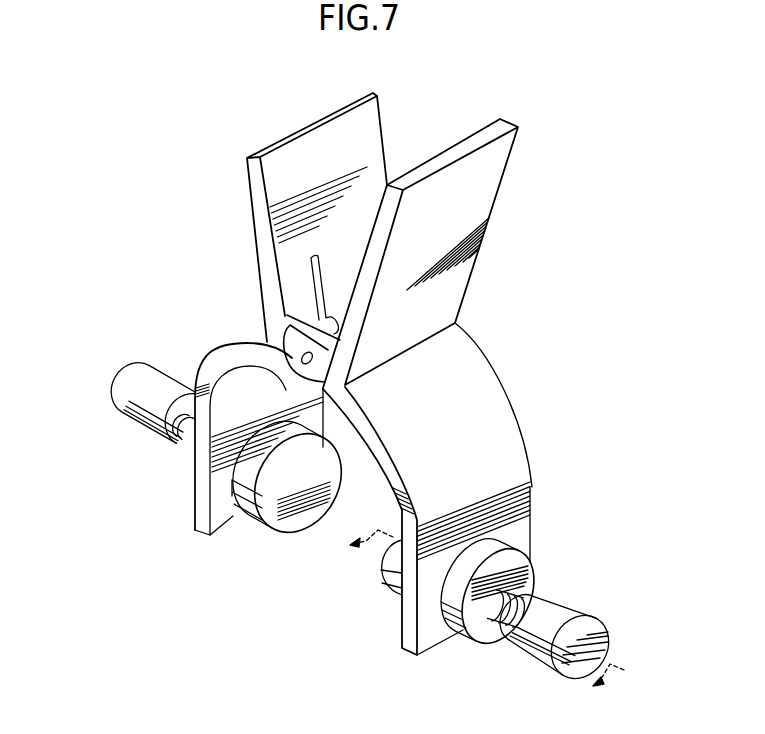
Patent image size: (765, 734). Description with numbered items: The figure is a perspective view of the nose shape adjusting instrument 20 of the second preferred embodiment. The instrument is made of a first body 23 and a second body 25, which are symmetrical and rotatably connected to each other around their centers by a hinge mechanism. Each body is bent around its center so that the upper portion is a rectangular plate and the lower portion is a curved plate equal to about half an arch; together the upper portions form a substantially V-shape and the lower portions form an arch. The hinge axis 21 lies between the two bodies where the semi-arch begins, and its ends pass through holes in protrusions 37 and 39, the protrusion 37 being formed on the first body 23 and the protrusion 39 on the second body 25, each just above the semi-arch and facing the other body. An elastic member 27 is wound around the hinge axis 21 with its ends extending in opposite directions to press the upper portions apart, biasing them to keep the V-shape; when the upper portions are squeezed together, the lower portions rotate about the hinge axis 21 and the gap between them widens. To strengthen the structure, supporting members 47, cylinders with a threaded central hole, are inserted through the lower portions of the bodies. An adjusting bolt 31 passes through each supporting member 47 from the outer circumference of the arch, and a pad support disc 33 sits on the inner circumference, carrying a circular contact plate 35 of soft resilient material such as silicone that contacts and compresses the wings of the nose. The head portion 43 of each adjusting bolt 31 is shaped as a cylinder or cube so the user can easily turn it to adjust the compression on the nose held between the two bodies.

The clamp assembly 20 is at (538, 247).
The hinge axis 21 is at (257, 344).
The first body 23 is at (233, 193).
The second body 25 is at (503, 370).
The elastic member 27 is at (318, 322).
The adjusting bolt 31 is at (178, 425).
The pad support disc 33 is at (247, 492).
The circular contact plate 35 is at (291, 522).
The protrusion 37 is at (287, 312).
The protrusion 39 is at (330, 356).
The head portion 43 is at (122, 396).
The supporting member 47 is at (458, 625).